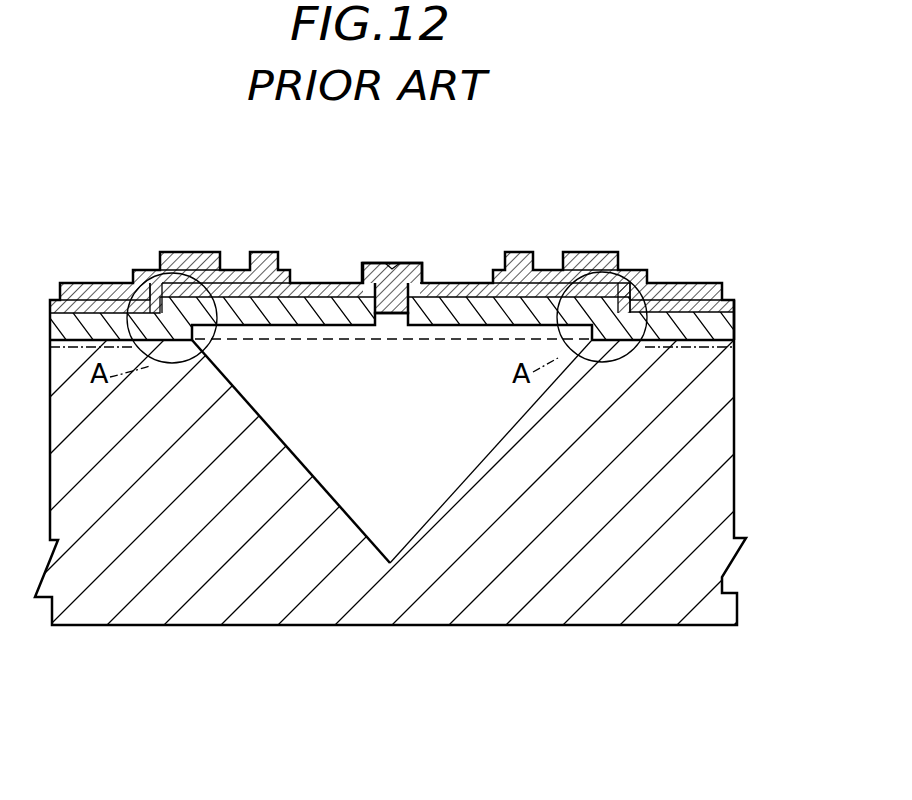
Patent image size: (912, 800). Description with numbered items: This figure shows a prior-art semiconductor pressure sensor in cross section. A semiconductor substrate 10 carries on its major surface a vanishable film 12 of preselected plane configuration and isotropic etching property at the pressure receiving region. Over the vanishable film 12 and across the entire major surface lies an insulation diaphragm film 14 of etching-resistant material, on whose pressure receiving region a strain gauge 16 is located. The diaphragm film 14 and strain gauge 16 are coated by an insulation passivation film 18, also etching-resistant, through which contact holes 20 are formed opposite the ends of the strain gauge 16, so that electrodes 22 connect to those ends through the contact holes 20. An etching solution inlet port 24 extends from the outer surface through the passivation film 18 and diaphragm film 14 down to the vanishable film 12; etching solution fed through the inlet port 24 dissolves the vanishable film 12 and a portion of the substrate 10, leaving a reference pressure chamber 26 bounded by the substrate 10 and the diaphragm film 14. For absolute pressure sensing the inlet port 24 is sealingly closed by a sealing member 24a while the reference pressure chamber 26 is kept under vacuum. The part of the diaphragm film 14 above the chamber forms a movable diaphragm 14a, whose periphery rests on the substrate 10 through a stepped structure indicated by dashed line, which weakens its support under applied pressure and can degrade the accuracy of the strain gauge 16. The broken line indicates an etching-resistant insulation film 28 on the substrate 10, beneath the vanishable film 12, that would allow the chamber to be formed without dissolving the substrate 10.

The semiconductor substrate 10 is at (717, 430).
The vanishable film 12 is at (238, 318).
The insulation diaphragm film 14 is at (703, 325).
The movable diaphragm 14a is at (310, 312).
The strain gauge 16 is at (237, 275).
The insulation passivation film 18 is at (452, 283).
The contact holes 20 is at (197, 262).
The electrodes 22 is at (93, 283).
The etching solution inlet port 24 is at (388, 317).
The sealing member 24a is at (385, 262).
The reference pressure chamber 26 is at (398, 512).
The insulation film 28 is at (737, 343).